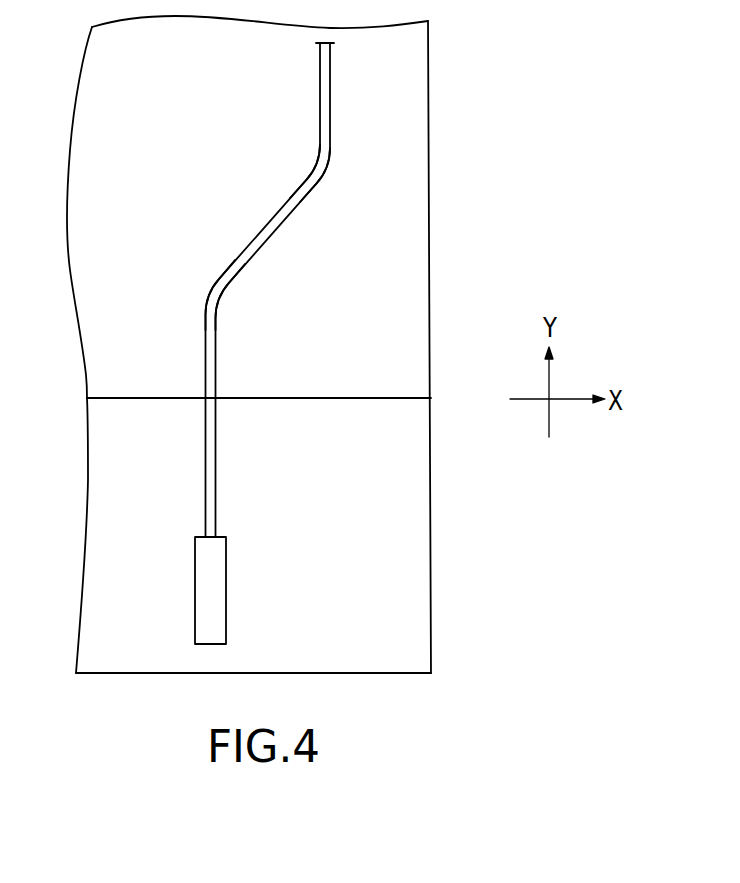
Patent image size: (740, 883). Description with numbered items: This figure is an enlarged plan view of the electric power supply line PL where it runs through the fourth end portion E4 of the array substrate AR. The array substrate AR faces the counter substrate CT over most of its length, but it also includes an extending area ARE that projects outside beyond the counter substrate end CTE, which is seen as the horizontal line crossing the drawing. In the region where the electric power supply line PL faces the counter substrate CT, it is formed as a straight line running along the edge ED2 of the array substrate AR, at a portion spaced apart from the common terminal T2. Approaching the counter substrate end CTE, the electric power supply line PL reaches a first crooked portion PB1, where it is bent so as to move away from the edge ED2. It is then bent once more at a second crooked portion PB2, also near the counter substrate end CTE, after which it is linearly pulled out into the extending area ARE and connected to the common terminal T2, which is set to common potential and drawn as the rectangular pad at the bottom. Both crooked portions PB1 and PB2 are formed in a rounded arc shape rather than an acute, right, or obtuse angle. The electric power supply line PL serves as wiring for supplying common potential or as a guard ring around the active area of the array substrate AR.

The electric power supply line PL is at (319, 58).
The fourth end portion E4 is at (398, 82).
The edge ED2 is at (431, 147).
The crooked portion PB1 is at (323, 195).
The crooked portion PB2 is at (212, 297).
The counter substrate CT is at (95, 374).
The counter substrate end CTE is at (312, 404).
The extending area ARE is at (120, 497).
The common terminal T2 is at (195, 578).
The array substrate AR is at (417, 605).